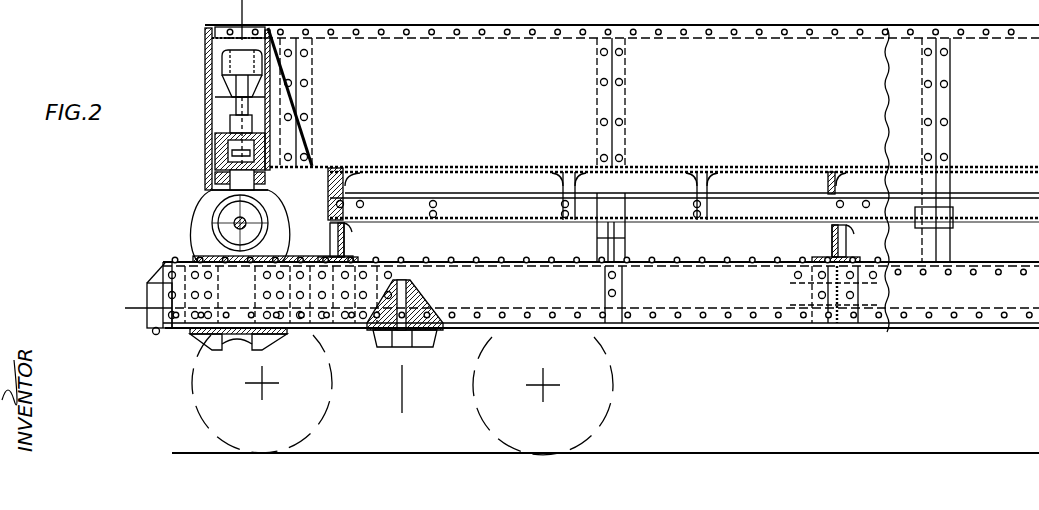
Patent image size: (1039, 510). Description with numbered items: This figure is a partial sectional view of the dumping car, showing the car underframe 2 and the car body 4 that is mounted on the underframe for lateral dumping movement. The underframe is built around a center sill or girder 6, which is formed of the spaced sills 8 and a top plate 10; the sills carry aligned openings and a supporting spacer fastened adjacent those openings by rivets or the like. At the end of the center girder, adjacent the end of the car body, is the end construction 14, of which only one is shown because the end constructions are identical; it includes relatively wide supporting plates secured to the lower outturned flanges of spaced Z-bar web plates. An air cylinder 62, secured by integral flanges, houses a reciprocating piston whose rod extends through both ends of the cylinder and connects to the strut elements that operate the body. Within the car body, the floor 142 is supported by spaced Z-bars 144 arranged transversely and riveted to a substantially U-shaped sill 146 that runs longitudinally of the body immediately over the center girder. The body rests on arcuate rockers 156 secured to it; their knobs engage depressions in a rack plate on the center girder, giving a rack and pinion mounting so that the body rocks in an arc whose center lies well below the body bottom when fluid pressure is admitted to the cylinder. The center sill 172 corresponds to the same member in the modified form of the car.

The car underframe 2 is at (687, 325).
The car body 4 is at (622, 143).
The center sill or girder 6 is at (782, 325).
The spaced sills 8 is at (489, 261).
The top plate 10 is at (177, 262).
The end construction 14 is at (215, 68).
The air cylinder 62 is at (207, 217).
The floor of the car 142 is at (648, 169).
The spaced Z-bars 144 is at (708, 186).
The U-shaped sill 146 is at (684, 227).
The rockers 156 is at (352, 227).
The center sill 172 is at (521, 304).